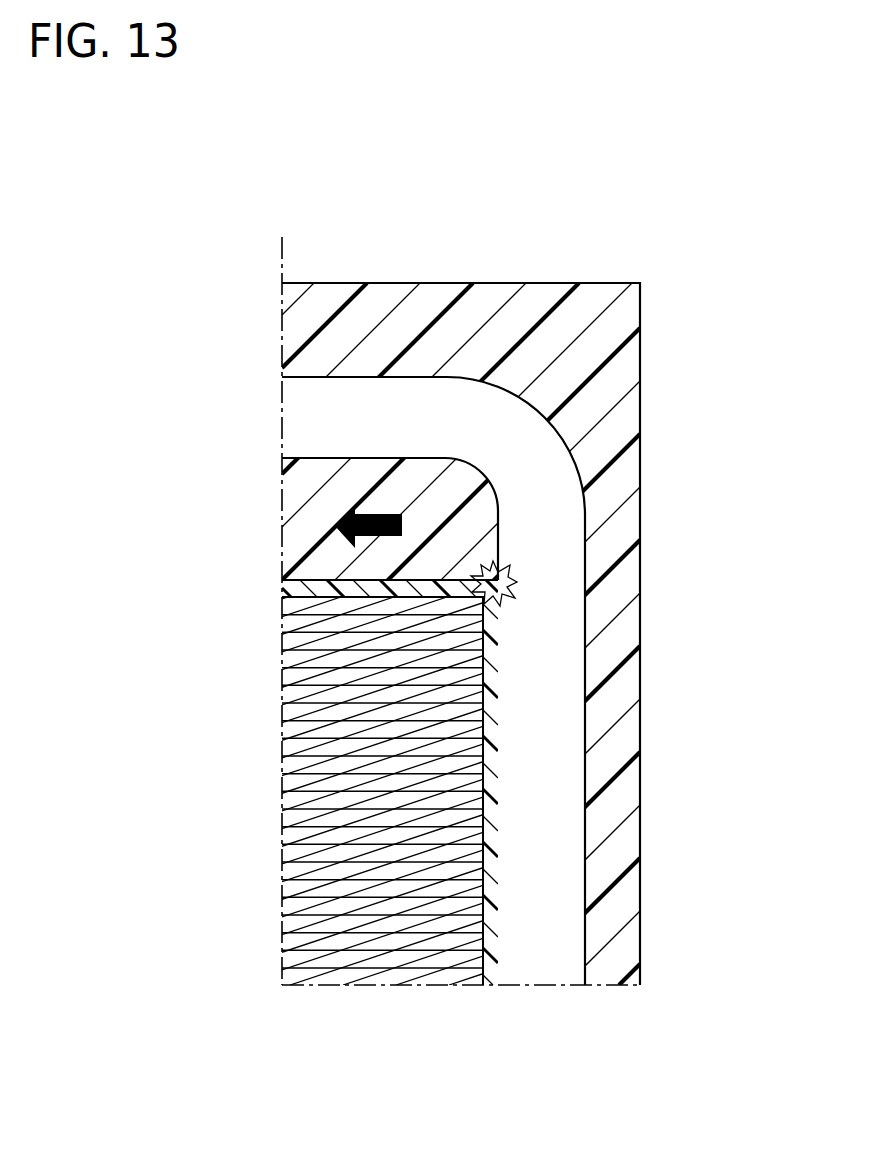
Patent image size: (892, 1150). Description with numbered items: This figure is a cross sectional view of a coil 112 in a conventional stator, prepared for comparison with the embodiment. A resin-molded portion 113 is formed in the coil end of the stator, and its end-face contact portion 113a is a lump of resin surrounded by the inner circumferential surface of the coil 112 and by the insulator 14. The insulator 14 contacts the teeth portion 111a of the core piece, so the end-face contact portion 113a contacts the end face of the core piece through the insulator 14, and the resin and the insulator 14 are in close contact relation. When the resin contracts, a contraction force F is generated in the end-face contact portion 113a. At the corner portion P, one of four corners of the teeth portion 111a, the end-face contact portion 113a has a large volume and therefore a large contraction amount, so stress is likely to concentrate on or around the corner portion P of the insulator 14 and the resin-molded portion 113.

The resin-molded portion 113 is at (597, 311).
The end-face contact portion 113a is at (292, 529).
The coil 112 is at (547, 535).
The insulator 14 is at (493, 657).
The teeth portion 111a is at (420, 748).
The contraction force F is at (372, 513).
The corner portion P is at (511, 585).